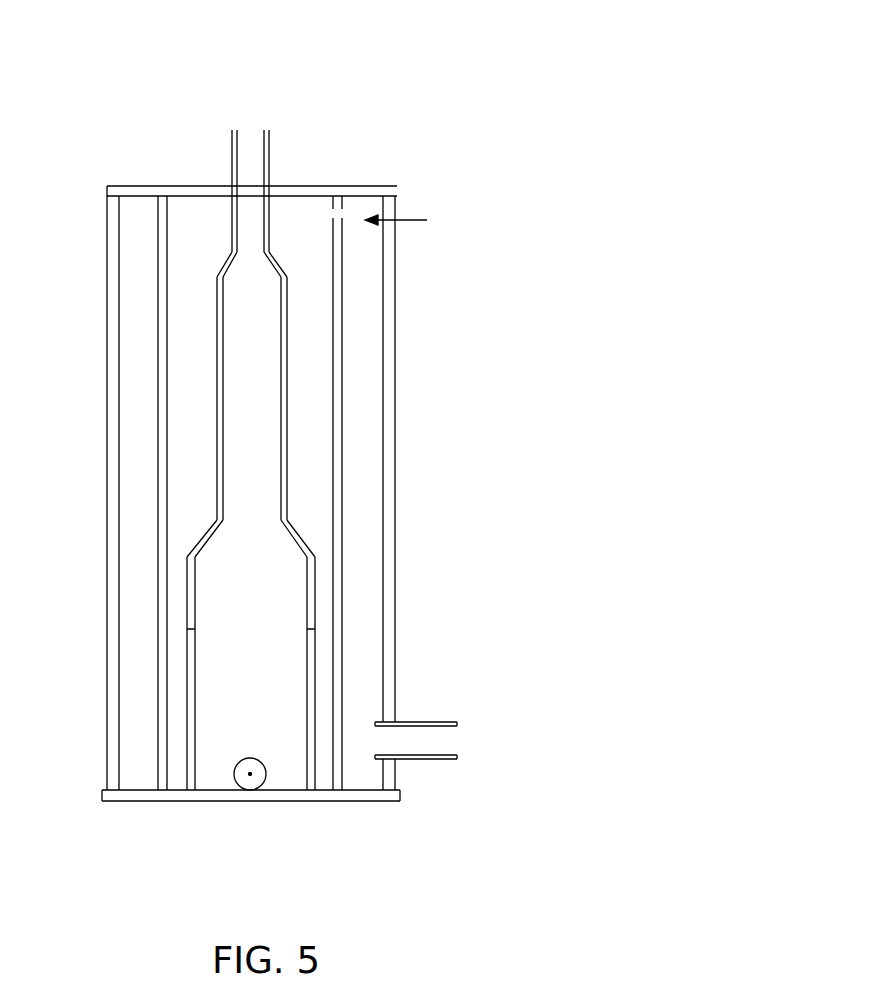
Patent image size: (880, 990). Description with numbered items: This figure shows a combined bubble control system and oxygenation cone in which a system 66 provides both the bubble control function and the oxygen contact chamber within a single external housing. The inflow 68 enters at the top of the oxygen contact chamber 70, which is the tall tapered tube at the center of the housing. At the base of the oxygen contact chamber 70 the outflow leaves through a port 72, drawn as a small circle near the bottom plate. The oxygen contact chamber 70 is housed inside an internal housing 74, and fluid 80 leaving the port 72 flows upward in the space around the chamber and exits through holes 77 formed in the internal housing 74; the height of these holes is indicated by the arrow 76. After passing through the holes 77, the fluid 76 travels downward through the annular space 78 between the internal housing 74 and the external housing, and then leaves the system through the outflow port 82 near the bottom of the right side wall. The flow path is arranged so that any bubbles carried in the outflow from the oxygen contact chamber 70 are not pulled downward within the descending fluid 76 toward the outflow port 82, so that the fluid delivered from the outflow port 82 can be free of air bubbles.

The system 66 is at (502, 130).
The inflow 68 is at (248, 126).
The oxygen contact chamber 70 is at (287, 395).
The port 72 is at (243, 780).
The internal housing 74 is at (342, 560).
The arrow 76 is at (408, 222).
The holes 77 is at (343, 213).
The annular passage 78 is at (360, 453).
The fluid 80 is at (180, 609).
The outflow port 82 is at (435, 720).